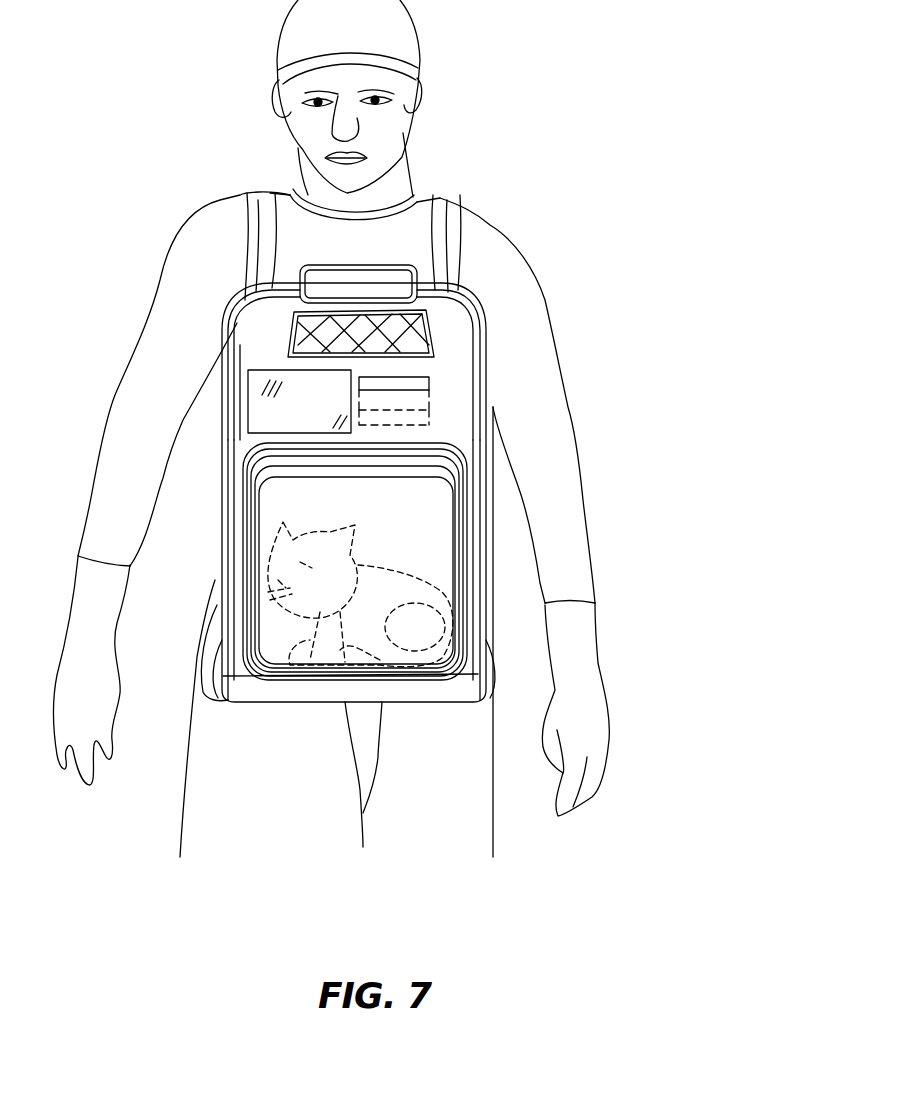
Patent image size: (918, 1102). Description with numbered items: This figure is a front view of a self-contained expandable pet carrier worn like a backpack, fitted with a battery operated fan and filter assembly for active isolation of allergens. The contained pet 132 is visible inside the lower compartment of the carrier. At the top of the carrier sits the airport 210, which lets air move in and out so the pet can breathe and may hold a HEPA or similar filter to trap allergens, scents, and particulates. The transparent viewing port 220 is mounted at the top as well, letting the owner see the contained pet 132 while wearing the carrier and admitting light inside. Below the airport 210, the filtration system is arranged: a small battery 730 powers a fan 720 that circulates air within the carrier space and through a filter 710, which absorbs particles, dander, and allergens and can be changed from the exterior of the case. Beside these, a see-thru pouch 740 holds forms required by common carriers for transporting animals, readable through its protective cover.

The transparent viewing port 220 is at (360, 245).
The airport 210 is at (415, 333).
The filter 710 is at (425, 381).
The fan 720 is at (429, 401).
The battery 730 is at (429, 420).
The see-thru pouch 740 is at (280, 370).
The contained pet 132 is at (375, 620).